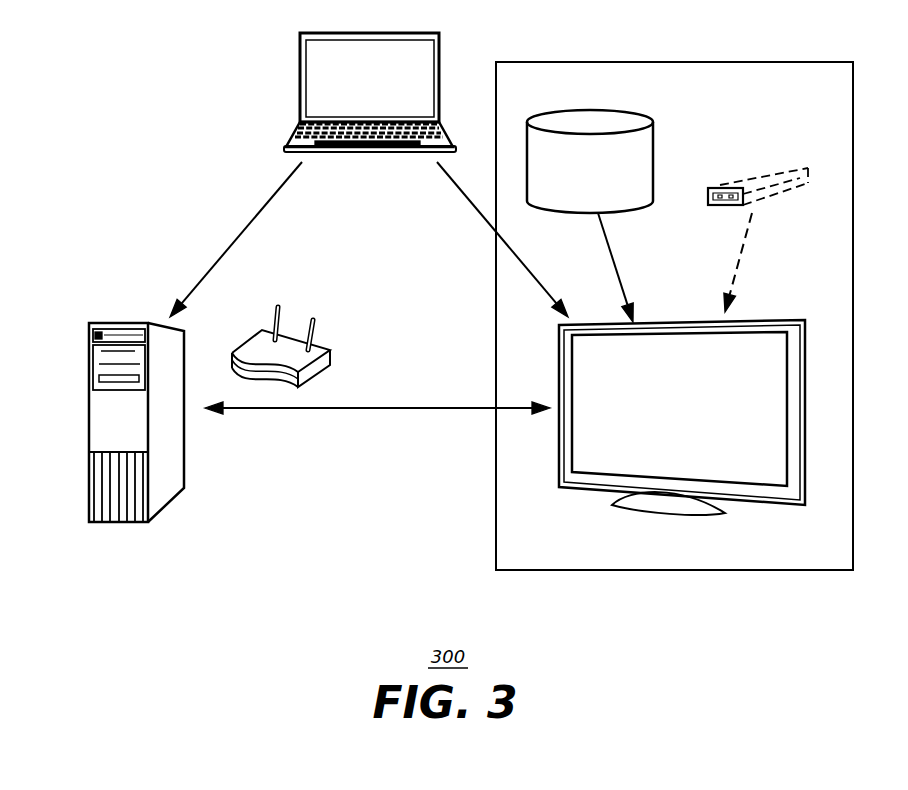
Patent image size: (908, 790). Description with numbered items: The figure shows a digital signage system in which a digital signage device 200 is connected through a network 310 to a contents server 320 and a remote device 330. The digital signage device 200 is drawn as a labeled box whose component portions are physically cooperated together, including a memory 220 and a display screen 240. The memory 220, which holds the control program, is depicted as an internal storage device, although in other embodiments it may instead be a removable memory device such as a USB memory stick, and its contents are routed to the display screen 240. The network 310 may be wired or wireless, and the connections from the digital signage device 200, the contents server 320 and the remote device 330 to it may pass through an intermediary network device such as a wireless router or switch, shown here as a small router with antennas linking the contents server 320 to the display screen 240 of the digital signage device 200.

The digital signage device 200 is at (677, 62).
The memory 220 is at (571, 179).
The display screen 240 is at (757, 320).
The network 310 is at (325, 350).
The contents server 320 is at (115, 323).
The remote device 330 is at (373, 33).